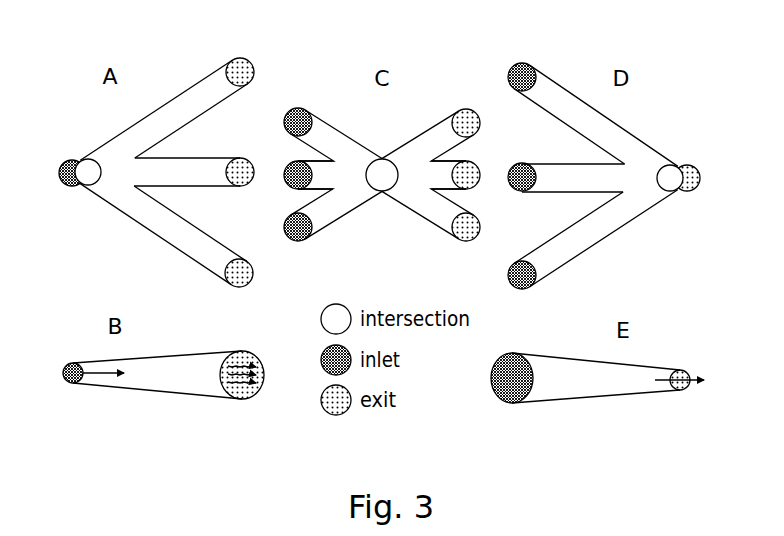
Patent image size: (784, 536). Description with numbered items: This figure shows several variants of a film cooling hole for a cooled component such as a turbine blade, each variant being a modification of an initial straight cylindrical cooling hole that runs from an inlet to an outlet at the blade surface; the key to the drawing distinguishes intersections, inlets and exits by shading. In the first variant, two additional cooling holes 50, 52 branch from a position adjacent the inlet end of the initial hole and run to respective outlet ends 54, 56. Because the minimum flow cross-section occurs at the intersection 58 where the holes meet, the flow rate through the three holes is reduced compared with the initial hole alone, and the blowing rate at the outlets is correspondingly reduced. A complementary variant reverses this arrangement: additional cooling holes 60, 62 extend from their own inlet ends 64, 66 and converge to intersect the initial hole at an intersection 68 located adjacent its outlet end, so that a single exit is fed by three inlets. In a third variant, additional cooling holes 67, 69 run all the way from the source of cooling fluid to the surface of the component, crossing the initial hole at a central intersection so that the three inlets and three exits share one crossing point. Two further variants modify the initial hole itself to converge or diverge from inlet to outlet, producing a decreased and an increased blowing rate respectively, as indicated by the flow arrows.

The additional cooling hole 50 is at (175, 95).
The additional cooling hole 52 is at (135, 236).
The outlet end 54 is at (240, 58).
The outlet end 56 is at (237, 287).
The intersection 58 is at (90, 158).
The additional cooling hole 60 is at (630, 122).
The additional cooling hole 62 is at (626, 243).
The inlet end 64 is at (514, 64).
The inlet end 66 is at (526, 290).
The additional cooling hole 67 is at (350, 140).
The intersection 68 is at (668, 194).
The additional cooling hole 69 is at (348, 212).